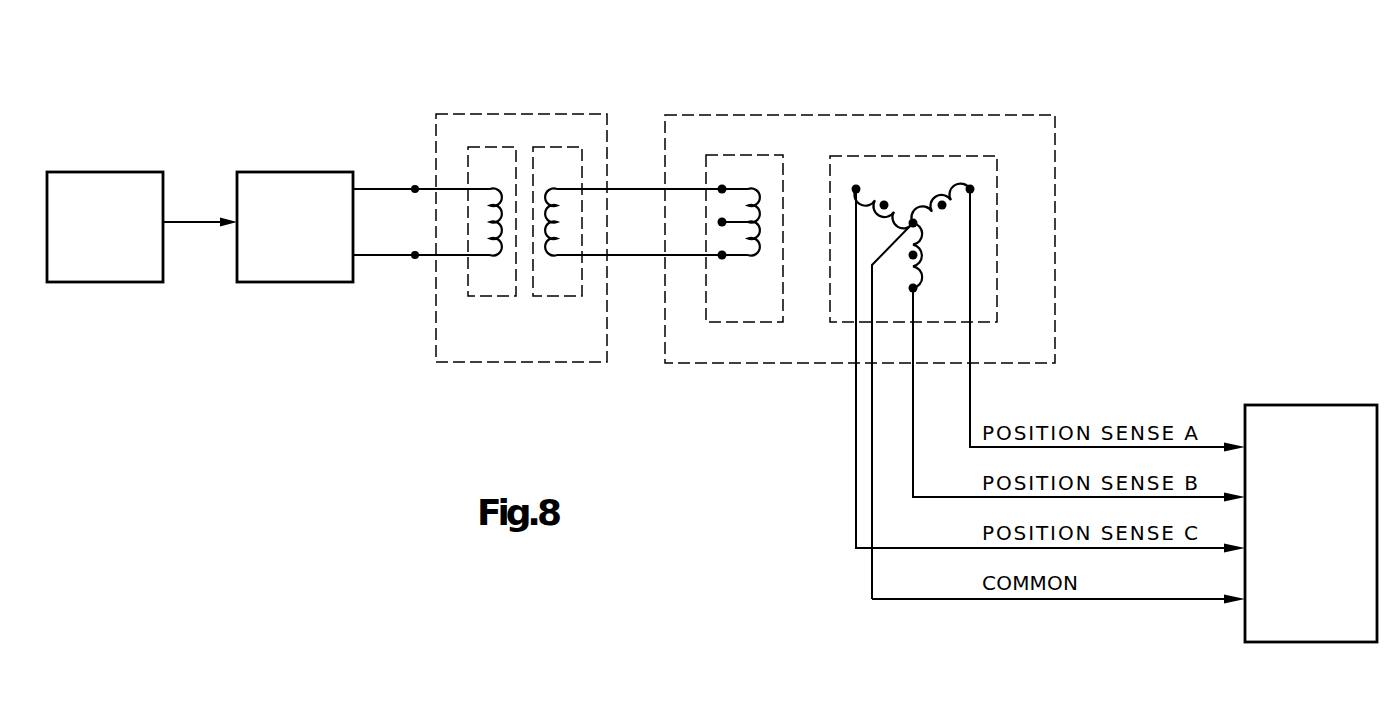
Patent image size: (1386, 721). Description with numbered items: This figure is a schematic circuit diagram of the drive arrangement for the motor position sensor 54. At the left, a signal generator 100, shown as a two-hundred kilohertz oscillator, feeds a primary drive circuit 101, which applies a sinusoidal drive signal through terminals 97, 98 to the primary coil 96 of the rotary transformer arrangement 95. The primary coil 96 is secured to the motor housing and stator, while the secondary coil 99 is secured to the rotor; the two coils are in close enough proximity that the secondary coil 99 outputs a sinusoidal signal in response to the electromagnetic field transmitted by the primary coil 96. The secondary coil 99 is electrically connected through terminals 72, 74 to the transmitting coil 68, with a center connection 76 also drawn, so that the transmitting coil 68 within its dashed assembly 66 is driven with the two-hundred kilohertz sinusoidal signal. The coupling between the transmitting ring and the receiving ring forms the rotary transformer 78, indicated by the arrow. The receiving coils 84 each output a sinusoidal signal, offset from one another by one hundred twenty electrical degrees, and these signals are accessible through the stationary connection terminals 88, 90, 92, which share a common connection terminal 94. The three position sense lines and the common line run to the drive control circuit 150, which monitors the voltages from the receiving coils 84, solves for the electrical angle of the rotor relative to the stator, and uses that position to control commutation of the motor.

The signal generator 100 is at (101, 188).
The primary drive circuit 101 is at (290, 178).
The terminal 97 is at (415, 183).
The terminal 98 is at (415, 250).
The rotary transformer arrangement 95 is at (499, 113).
The primary coil 96 is at (492, 220).
The secondary coil 99 is at (557, 223).
The terminal 72 is at (722, 189).
The terminal 74 is at (722, 255).
The secondary winding center tap 76 is at (722, 222).
The excitation coil assembly 66 is at (753, 155).
The transmitting coil 68 is at (757, 237).
The rotary transformer 78 is at (800, 335).
The motor position sensor 54 is at (848, 115).
The receiving coils 84 is at (987, 323).
The connection terminal 88 is at (856, 189).
The connection terminal 90 is at (970, 189).
The connection terminal 92 is at (913, 288).
The common connection terminal 94 is at (913, 223).
The drive control circuit 150 is at (1290, 428).